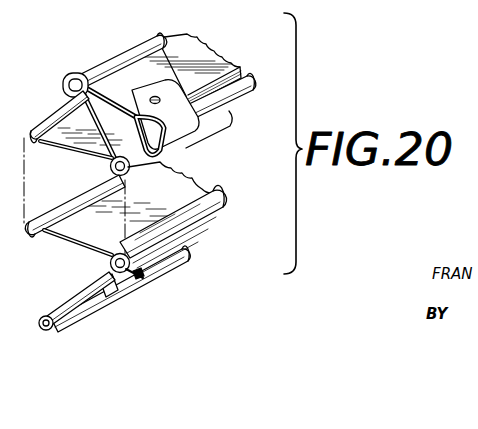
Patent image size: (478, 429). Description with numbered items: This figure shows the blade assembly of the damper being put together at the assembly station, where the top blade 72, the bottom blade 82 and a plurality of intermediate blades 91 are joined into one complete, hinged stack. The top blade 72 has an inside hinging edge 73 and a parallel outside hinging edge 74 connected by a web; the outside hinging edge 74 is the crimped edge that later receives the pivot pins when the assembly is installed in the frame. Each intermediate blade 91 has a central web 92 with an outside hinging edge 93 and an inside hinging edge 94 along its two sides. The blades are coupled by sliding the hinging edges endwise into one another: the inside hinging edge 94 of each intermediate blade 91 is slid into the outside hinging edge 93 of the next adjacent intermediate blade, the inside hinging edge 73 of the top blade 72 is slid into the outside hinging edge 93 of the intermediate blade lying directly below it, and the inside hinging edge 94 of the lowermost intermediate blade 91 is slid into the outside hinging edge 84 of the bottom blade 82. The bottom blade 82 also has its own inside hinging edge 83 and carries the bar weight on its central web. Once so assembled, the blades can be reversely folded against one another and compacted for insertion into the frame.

The top blade 72 is at (203, 46).
The inside hinging edge 73 is at (164, 33).
The outside hinging edge 74 is at (241, 97).
The bottom blade 82 is at (112, 297).
The inside hinging edge 83 is at (68, 321).
The outside hinging edge 84 is at (216, 218).
The intermediate blade 91 is at (189, 181).
The central web 92 is at (78, 145).
The outside hinging edge 93 is at (98, 66).
The inside hinging edge 94 is at (44, 126).